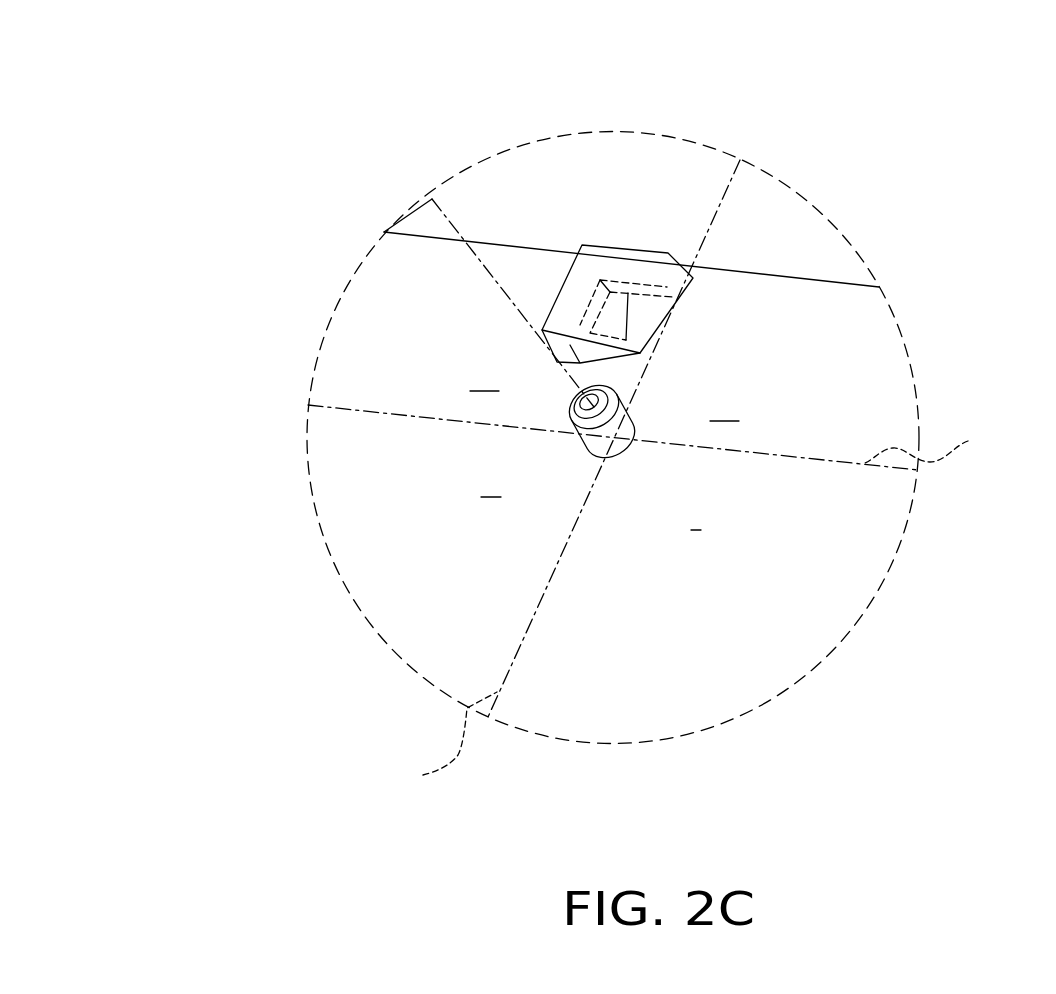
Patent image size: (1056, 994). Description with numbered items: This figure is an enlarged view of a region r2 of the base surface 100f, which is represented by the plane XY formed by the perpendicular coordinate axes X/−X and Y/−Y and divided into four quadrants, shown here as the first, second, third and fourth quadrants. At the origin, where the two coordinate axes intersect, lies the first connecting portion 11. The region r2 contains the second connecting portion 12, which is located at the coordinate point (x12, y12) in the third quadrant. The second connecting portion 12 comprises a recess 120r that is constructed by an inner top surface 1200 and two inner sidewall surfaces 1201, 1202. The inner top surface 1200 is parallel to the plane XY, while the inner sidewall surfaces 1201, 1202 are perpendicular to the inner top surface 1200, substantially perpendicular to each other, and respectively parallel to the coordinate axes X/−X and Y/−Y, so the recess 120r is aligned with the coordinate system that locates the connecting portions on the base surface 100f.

The base surface 100f is at (338, 492).
The region r2 is at (190, 120).
The recess 120r is at (647, 317).
The second connecting portion 12 is at (715, 196).
The inner top surface 1200 is at (628, 340).
The inner sidewall surface 1201 is at (595, 295).
The inner sidewall surface 1202 is at (687, 297).
The first connecting portion 11 is at (627, 453).